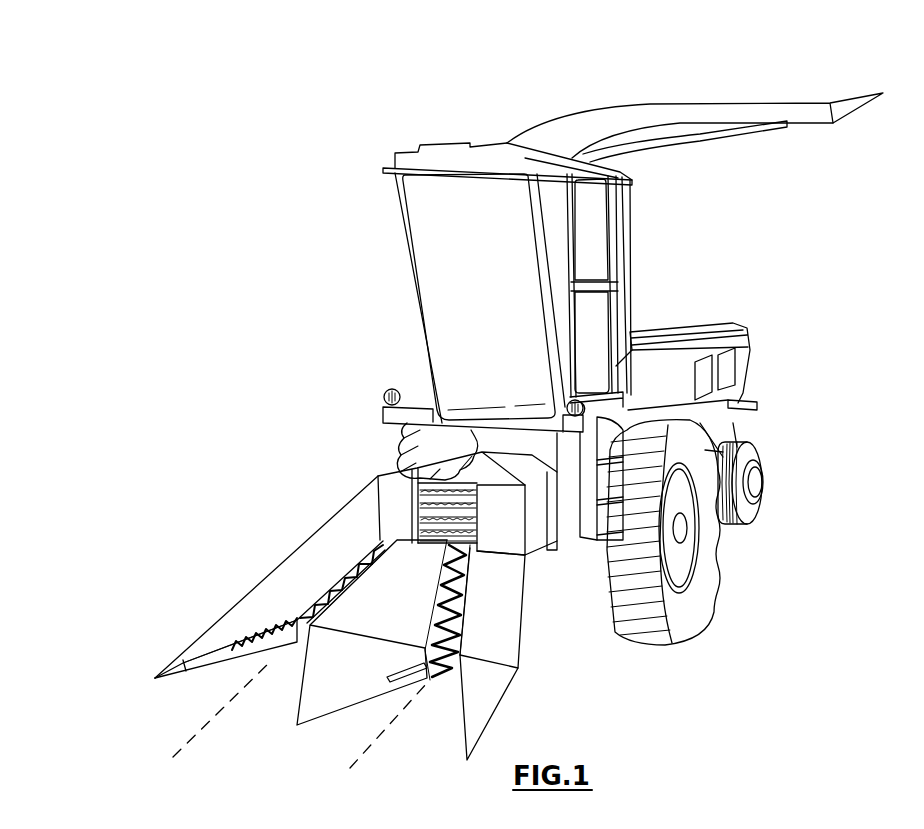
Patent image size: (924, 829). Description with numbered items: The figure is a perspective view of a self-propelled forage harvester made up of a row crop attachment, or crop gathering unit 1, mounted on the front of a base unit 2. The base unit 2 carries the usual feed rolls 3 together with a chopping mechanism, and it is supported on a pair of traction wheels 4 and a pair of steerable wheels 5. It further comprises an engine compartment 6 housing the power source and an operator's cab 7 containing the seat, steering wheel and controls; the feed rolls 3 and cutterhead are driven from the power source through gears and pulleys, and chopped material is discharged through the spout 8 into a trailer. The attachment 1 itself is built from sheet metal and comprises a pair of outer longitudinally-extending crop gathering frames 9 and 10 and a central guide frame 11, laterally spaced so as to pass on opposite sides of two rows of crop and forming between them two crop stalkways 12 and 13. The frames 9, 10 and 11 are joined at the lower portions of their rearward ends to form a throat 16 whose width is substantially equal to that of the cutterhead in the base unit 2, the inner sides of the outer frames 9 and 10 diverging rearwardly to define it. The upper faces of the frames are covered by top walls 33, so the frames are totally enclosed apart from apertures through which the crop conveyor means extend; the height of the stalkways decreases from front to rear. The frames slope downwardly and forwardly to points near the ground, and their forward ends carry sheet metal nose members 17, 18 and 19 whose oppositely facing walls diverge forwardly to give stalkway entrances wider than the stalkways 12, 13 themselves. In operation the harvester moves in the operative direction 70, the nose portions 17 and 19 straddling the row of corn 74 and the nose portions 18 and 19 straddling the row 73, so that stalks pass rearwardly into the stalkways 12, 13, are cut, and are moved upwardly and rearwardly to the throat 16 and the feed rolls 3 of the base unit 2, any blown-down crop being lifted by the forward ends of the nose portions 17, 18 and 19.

The row crop attachment 1 is at (312, 617).
The base unit 2 is at (633, 362).
The feed rolls 3 is at (439, 503).
The traction wheels 4 is at (690, 628).
The steerable wheels 5 is at (740, 525).
The engine compartment 6 is at (693, 328).
The operator's cab 7 is at (632, 262).
The spout 8 is at (677, 108).
The outer crop gathering frame 9 is at (520, 650).
The outer crop gathering frame 10 is at (268, 585).
The central guide frame 11 is at (427, 681).
The crop stalkway 12 is at (433, 684).
The crop stalkway 13 is at (281, 665).
The throat 16 is at (462, 521).
The nose member 17 is at (493, 722).
The nose member 18 is at (204, 637).
The nose member 19 is at (350, 710).
The top walls 33 is at (313, 592).
The operative direction 70 is at (118, 677).
The row of corn 73 is at (363, 752).
The row of corn 74 is at (191, 731).